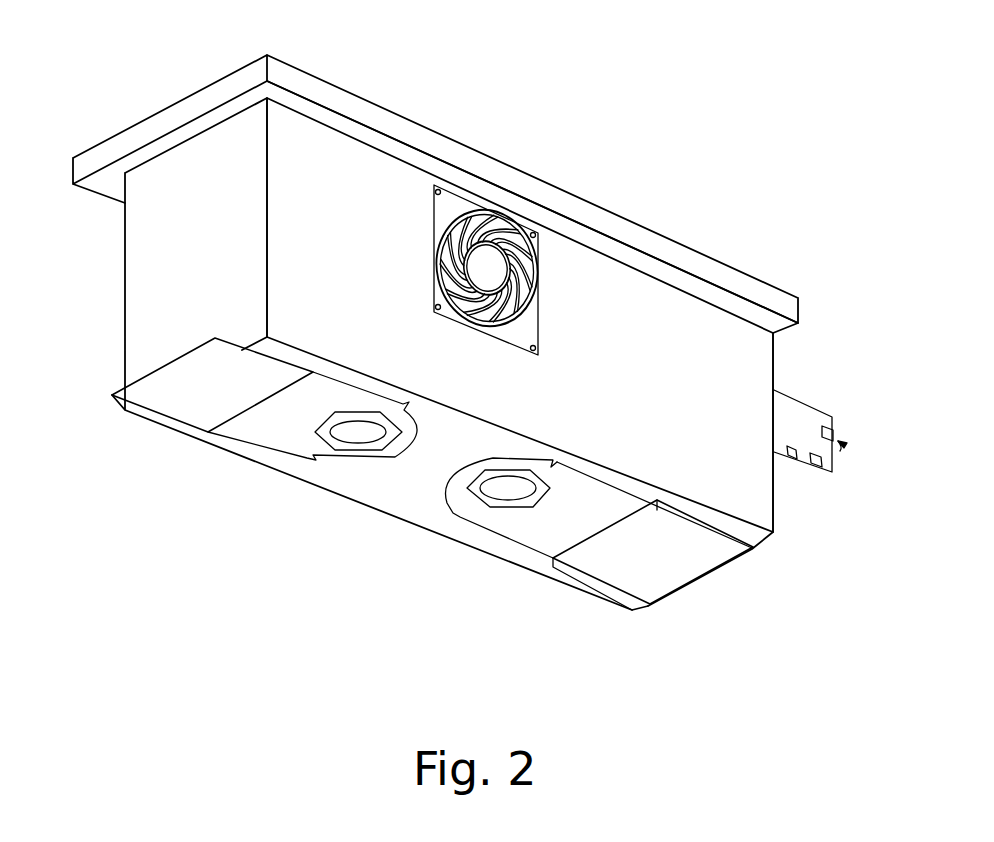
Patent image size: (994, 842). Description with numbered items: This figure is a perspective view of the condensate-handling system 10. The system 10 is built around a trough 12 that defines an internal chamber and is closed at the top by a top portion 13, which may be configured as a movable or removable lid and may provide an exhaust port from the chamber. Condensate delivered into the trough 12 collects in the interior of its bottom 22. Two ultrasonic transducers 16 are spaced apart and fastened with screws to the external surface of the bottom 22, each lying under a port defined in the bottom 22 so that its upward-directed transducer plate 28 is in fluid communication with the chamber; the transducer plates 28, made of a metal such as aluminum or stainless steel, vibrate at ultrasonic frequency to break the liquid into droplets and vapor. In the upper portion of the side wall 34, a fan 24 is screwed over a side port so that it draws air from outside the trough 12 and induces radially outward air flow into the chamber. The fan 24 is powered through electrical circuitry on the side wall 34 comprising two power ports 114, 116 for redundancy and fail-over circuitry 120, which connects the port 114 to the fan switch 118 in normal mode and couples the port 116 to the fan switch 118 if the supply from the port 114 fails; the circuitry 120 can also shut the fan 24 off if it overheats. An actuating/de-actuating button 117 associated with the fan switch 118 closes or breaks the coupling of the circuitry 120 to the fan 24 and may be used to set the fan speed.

The system 10 is at (355, 68).
The trough 12 is at (420, 140).
The top portion 13 is at (730, 268).
The ultrasonic transducers 16 is at (175, 407).
The bottom 22 is at (447, 448).
The fan 24 is at (535, 272).
The transducer plate 28 is at (353, 432).
The side wall 34 is at (309, 190).
The power port 114 is at (792, 458).
The power port 116 is at (816, 464).
The actuating/de-actuating button 117 is at (844, 448).
The fan switch 118 is at (829, 428).
The fail-over circuitry 120 is at (776, 431).